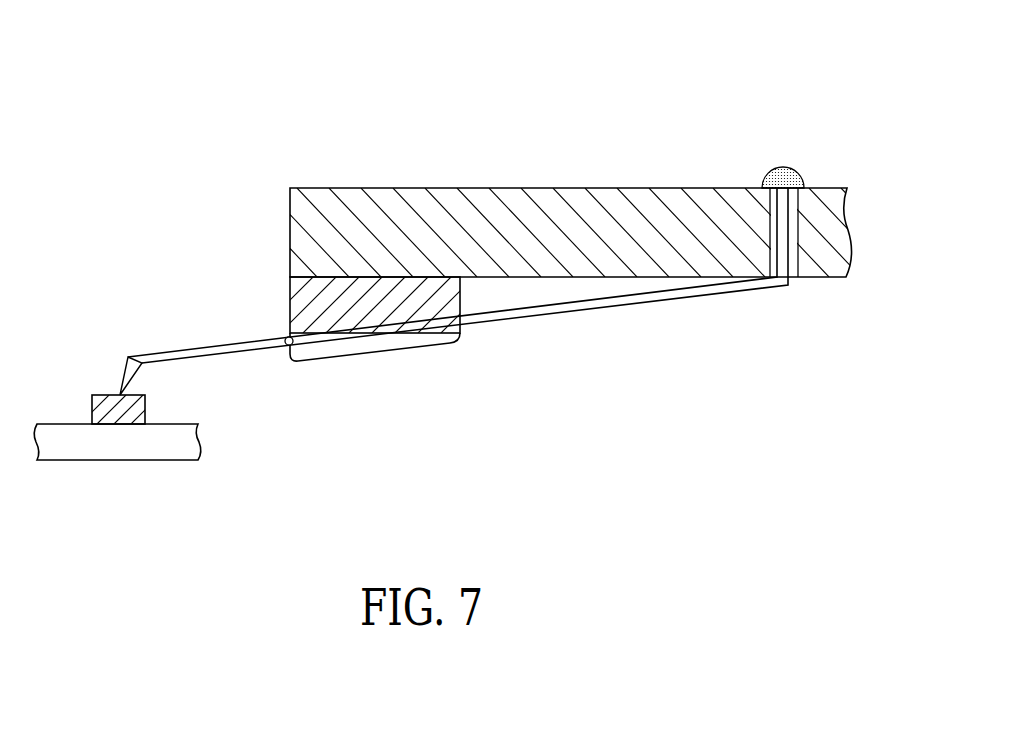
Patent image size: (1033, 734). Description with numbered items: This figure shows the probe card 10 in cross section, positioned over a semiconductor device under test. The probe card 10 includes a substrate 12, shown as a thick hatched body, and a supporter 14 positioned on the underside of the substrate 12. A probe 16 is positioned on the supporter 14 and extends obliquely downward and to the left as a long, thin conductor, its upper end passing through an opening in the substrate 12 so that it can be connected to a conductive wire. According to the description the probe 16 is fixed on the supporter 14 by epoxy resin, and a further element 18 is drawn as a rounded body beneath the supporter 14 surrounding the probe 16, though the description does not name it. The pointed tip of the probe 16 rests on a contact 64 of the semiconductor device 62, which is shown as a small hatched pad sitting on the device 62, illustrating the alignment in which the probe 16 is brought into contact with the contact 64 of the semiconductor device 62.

The probe card 10 is at (538, 216).
The substrate 12 is at (831, 200).
The supporter 14 is at (290, 305).
The probe 16 is at (166, 357).
The sheath / encapsulation 18 is at (401, 346).
The semiconductor device 62 is at (190, 441).
The contact 64 is at (148, 405).